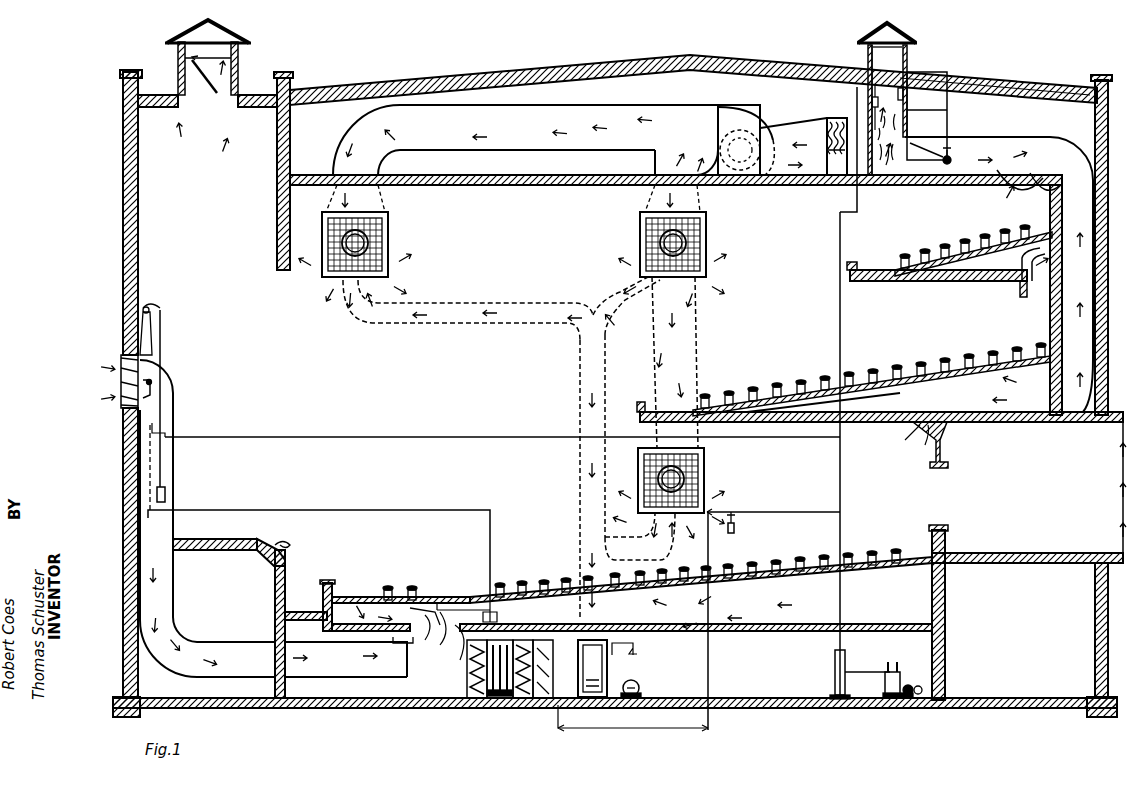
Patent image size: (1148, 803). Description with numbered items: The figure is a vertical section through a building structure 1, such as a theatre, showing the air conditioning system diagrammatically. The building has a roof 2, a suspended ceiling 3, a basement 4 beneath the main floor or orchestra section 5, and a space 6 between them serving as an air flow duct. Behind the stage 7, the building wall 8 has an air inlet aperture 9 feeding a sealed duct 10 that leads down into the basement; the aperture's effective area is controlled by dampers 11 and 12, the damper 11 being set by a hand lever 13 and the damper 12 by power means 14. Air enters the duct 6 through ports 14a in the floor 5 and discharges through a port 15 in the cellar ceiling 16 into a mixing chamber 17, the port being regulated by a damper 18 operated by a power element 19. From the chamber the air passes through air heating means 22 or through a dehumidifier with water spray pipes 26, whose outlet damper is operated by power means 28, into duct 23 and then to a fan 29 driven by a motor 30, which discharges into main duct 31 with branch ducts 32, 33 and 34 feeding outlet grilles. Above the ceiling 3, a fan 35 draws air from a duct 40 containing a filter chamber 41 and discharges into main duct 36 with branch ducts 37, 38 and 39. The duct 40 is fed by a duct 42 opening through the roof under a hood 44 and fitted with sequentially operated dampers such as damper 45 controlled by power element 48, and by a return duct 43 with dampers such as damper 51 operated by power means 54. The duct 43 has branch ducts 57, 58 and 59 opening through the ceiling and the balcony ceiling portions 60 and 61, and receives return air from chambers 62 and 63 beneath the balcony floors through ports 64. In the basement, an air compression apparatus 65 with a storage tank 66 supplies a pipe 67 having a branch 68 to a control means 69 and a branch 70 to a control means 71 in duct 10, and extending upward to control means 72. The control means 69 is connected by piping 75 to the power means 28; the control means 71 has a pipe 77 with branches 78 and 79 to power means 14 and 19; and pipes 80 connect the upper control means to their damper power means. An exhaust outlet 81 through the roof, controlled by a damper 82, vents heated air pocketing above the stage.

The building structure 1 is at (1108, 212).
The roof 2 is at (480, 82).
The suspended ceiling 3 is at (528, 186).
The basement 4 is at (745, 680).
The main floor or orchestra section 5 is at (765, 568).
The air flow duct or passageway 6 is at (722, 609).
The stage 7 is at (232, 540).
The building wall 8 is at (123, 262).
The air inlet port or aperture 9 is at (121, 378).
The duct or passageway 10 is at (175, 410).
The adjustable damper 11 is at (121, 398).
The adjustable damper 12 is at (121, 362).
The hand lever 13 is at (152, 384).
The power means 14 is at (152, 320).
The ports or passageways 14a is at (452, 592).
The port 15 is at (440, 632).
The ceiling of the cellar 16 is at (745, 628).
The mixing chamber 17 is at (458, 662).
The damper 18 is at (405, 605).
The power element 19 is at (492, 608).
The air heating means 22 is at (503, 700).
The duct 23 is at (580, 705).
The water spray pipes 26 is at (470, 700).
The power means 28 is at (548, 700).
The fan or impelling means 29 is at (592, 668).
The motor 30 is at (640, 684).
The main duct or passageway 31 is at (578, 385).
The branch duct 32 is at (640, 512).
The branch duct 33 is at (618, 305).
The branch duct 34 is at (520, 312).
The fan or air impelling means 35 is at (745, 122).
The main duct 36 is at (715, 120).
The branch duct 37 is at (655, 162).
The branch duct 38 is at (705, 335).
The branch duct 39 is at (525, 140).
The duct or passageway 40 is at (795, 130).
The filter chamber 41 is at (840, 118).
The branch duct 42 is at (856, 100).
The duct 43 is at (985, 150).
The hood or cap member 44 is at (892, 32).
The damper means 45 is at (898, 118).
The power element 48 is at (910, 78).
The damper 51 is at (900, 183).
The power means 54 is at (950, 150).
The branch duct 57 is at (1008, 190).
The branch duct 58 is at (1030, 260).
The branch duct 59 is at (948, 402).
The ceiling portion 60 is at (935, 282).
The ceiling portion 61 is at (840, 425).
The chamber 62 is at (968, 248).
The chamber 63 is at (875, 375).
The ports or passageways 64 is at (1000, 232).
The air compression apparatus 65 is at (890, 670).
The compressed air storage tank 66 is at (835, 662).
The pipe or conduit 67 is at (840, 238).
The branch conduit or pipe 68 is at (780, 512).
The control means 69 is at (735, 528).
The branch pipe or conduit 70 is at (445, 437).
The control means 71 is at (166, 493).
The control means 72 is at (872, 100).
The piping 75 is at (722, 648).
The pipe or conduit 77 is at (160, 426).
The branch 78 is at (162, 348).
The branch 79 is at (275, 515).
The pipes or conduits 80 is at (960, 85).
The exhaust outlet 81 is at (238, 65).
The damper 82 is at (192, 65).